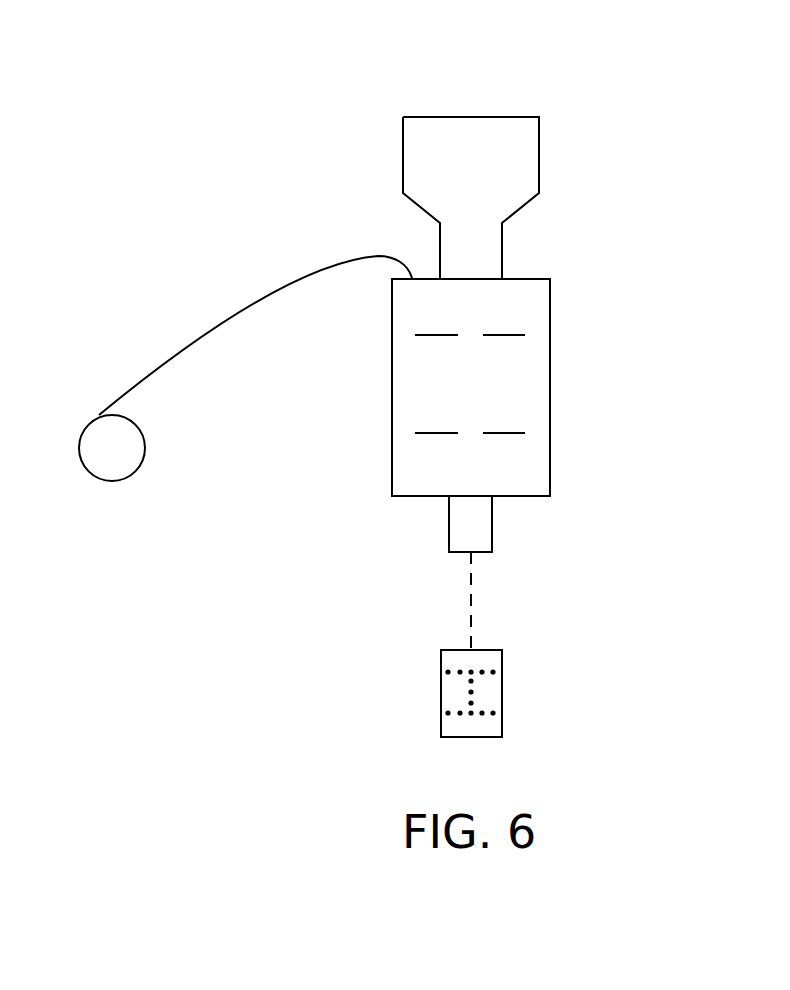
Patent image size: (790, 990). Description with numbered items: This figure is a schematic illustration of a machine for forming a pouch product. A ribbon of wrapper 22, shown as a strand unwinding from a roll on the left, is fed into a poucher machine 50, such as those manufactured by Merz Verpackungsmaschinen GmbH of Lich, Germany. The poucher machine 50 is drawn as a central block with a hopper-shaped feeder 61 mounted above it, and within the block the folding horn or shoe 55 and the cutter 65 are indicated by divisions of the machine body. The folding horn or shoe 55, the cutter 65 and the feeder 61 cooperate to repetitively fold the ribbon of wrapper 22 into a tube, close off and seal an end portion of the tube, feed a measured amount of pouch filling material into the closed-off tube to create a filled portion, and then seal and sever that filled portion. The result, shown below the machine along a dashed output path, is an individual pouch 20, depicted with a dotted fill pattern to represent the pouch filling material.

The feeder 61 is at (469, 132).
The poucher machine 50 is at (517, 381).
The folding horn or shoe 55 is at (527, 303).
The cutter 65 is at (527, 463).
The pouch 20 is at (441, 697).
The wrapper 22 is at (210, 332).